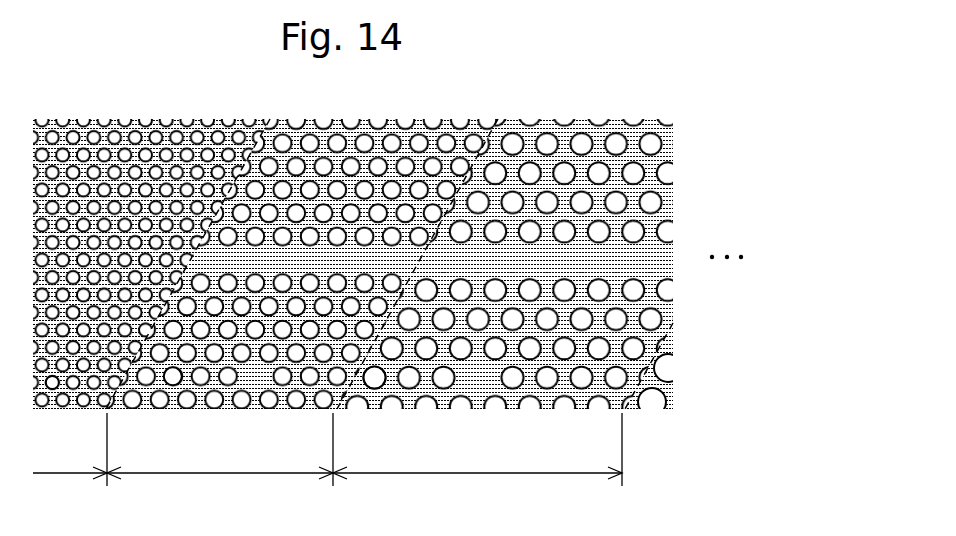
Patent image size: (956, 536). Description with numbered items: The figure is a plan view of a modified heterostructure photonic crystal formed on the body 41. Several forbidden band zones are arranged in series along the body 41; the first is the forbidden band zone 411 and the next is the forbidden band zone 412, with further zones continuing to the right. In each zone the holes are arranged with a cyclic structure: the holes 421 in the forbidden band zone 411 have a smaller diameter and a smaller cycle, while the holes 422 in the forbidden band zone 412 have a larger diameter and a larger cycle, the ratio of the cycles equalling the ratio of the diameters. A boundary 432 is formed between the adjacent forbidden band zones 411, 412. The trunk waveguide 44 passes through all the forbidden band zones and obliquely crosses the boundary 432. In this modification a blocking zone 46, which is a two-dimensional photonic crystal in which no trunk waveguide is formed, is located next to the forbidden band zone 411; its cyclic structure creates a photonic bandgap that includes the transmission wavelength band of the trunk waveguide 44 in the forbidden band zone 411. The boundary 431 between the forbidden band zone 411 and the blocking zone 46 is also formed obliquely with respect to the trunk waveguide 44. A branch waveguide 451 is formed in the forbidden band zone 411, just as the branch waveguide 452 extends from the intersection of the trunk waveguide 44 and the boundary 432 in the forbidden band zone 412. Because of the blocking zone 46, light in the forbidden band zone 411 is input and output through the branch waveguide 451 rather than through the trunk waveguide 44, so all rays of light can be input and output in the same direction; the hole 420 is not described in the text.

The body 41 is at (612, 133).
The trunk waveguide 44 is at (655, 255).
The blocking zone 46 is at (70, 459).
The forbidden band zone 411 is at (220, 459).
The forbidden band zone 412 is at (477, 459).
The small hole 420 is at (55, 388).
The holes 421 is at (176, 384).
The holes 422 is at (378, 387).
The boundary 431 is at (258, 157).
The boundary 432 is at (477, 167).
The branch waveguide 451 is at (257, 373).
The branch waveguide 452 is at (475, 375).